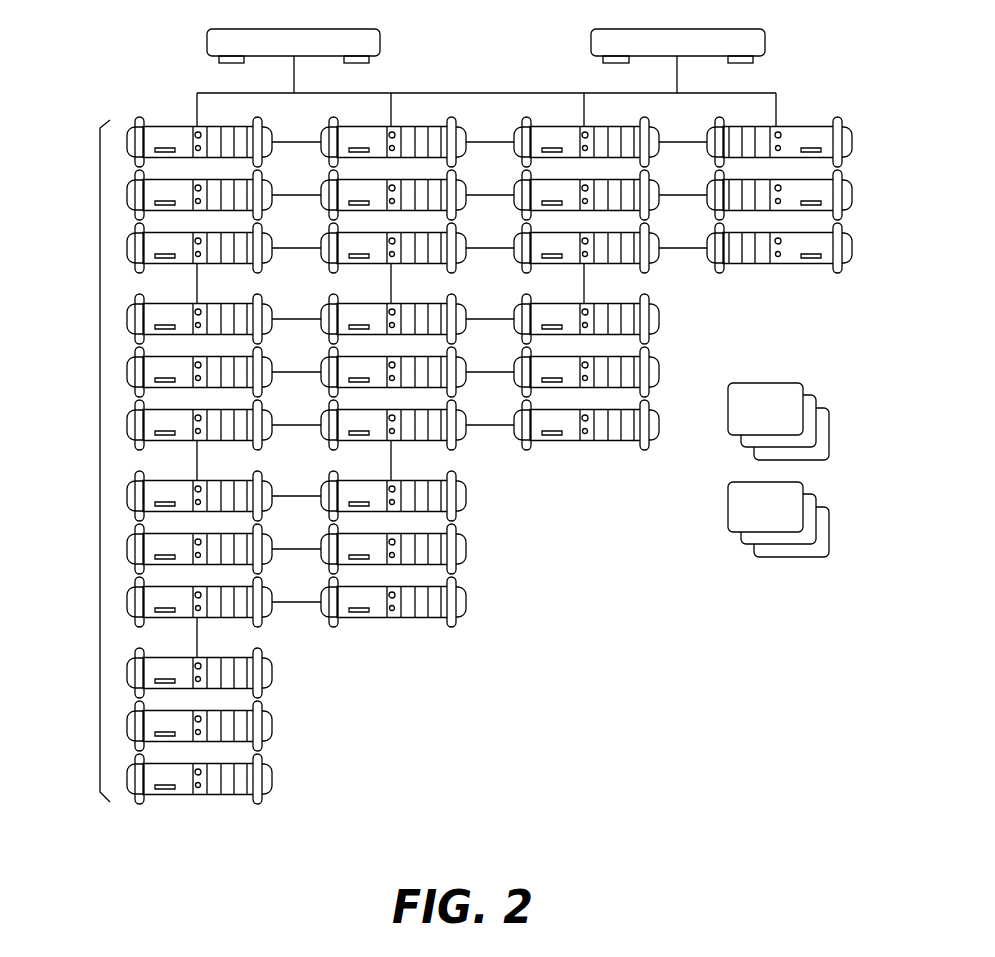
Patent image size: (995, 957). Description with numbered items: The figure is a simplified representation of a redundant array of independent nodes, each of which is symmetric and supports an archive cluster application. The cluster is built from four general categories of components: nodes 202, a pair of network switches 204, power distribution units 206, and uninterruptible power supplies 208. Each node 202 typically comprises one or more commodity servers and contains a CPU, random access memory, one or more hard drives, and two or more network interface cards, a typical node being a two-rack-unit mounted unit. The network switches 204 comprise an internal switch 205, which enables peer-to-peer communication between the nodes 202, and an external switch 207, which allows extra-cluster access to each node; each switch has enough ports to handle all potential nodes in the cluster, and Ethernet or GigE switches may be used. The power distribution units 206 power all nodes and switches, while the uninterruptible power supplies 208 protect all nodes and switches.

The nodes 202 is at (100, 475).
The network switches 204 is at (781, 91).
The internal switch 205 is at (207, 43).
The power distribution units 206 is at (764, 383).
The external switch 207 is at (765, 43).
The uninterruptible power supplies 208 is at (774, 558).